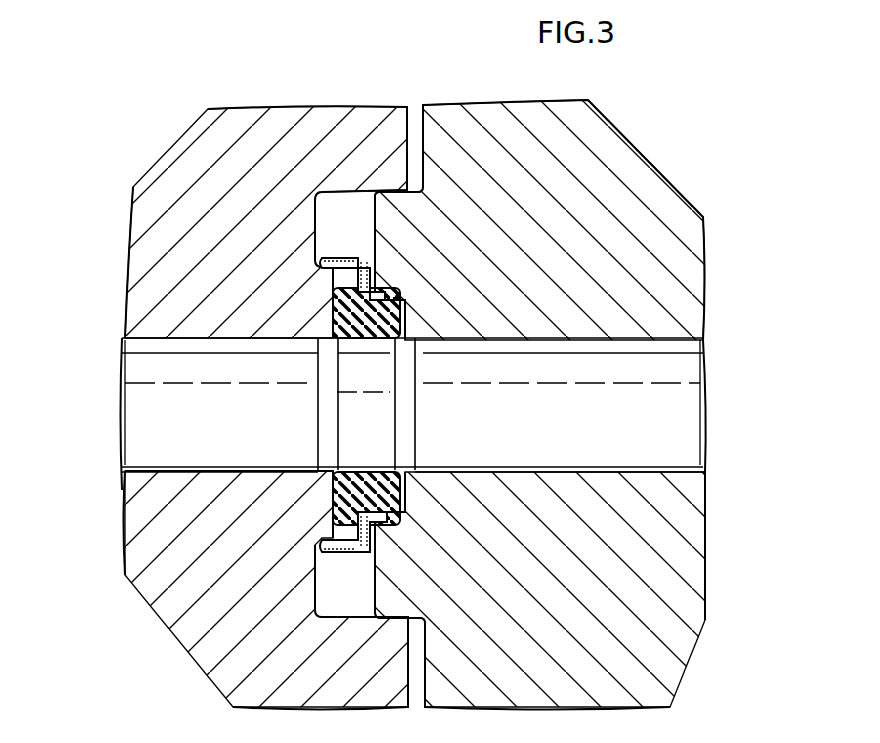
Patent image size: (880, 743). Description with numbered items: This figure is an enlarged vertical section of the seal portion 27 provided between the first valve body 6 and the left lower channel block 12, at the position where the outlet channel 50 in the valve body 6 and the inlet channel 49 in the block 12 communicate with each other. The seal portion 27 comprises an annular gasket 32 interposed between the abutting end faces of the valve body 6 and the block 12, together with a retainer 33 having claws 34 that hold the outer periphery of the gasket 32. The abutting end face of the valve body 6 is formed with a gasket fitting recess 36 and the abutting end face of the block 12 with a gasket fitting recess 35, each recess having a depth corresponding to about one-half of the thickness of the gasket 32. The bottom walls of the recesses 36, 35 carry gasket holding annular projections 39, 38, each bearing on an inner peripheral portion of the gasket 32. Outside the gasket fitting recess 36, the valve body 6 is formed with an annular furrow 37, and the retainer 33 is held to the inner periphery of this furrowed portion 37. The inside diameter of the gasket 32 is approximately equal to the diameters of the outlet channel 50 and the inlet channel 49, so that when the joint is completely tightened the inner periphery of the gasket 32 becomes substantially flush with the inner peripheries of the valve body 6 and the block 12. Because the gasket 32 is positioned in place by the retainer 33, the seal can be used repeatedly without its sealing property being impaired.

The first valve body 6 is at (165, 532).
The left lower channel block 12 is at (670, 548).
The seal portion 27 is at (409, 322).
The annular gasket 32 is at (362, 477).
The retainer 33 is at (355, 260).
The claws 34 is at (370, 295).
The gasket fitting recess 35 is at (399, 298).
The gasket fitting recess 36 is at (333, 303).
The annular furrow 37 is at (317, 217).
The gasket holding annular projection 38 is at (420, 340).
The gasket holding annular projection 39 is at (313, 318).
The inlet channel 49 is at (690, 470).
The outlet channel 50 is at (157, 465).